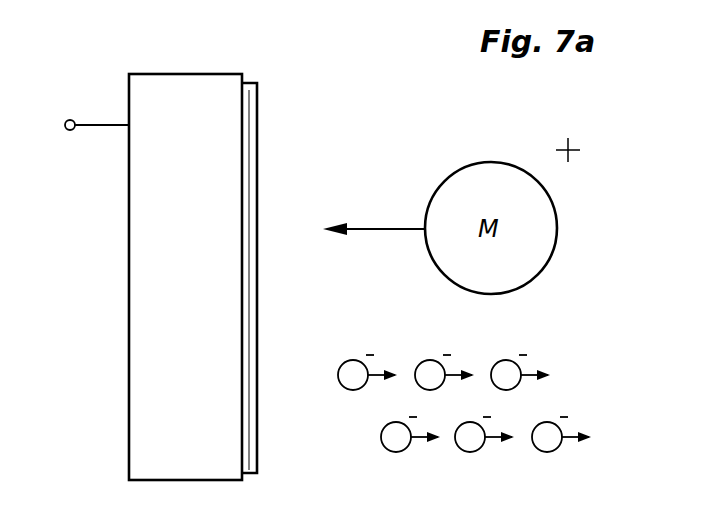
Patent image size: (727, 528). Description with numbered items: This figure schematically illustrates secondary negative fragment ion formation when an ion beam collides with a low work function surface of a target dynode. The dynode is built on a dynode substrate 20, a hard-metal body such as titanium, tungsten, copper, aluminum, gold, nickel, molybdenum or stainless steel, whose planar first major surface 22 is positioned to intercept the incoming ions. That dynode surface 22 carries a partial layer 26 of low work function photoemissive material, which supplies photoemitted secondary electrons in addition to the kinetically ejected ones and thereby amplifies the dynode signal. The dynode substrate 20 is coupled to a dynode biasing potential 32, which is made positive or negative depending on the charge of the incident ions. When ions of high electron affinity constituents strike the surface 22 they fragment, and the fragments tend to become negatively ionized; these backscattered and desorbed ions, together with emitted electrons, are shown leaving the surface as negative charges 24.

The dynode substrate 20 is at (138, 379).
The first major surface 22 is at (258, 98).
The partial layer of low work function photoemissive material 26 is at (248, 156).
The dynode biasing potential 32 is at (68, 130).
The negative charges 24 is at (529, 335).